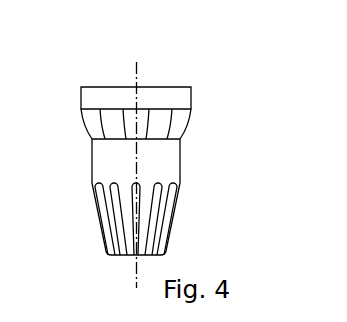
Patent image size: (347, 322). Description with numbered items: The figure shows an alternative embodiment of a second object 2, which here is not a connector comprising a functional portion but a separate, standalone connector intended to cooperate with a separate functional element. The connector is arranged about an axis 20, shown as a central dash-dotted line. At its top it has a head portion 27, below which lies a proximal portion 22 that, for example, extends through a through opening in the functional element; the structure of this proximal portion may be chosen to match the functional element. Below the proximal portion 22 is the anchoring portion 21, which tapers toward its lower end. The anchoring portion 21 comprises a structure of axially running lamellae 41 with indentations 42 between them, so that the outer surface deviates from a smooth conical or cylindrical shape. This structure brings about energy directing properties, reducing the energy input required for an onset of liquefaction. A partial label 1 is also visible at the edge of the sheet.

The second object 2 is at (208, 130).
The head portion 27 is at (98, 99).
The axis 20 is at (137, 71).
The proximal portion 22 is at (65, 132).
The anchoring portion 21 is at (65, 188).
The lamellae 41 is at (167, 215).
The indentations 42 is at (128, 257).
The device (partial label) 1 is at (0, 101).